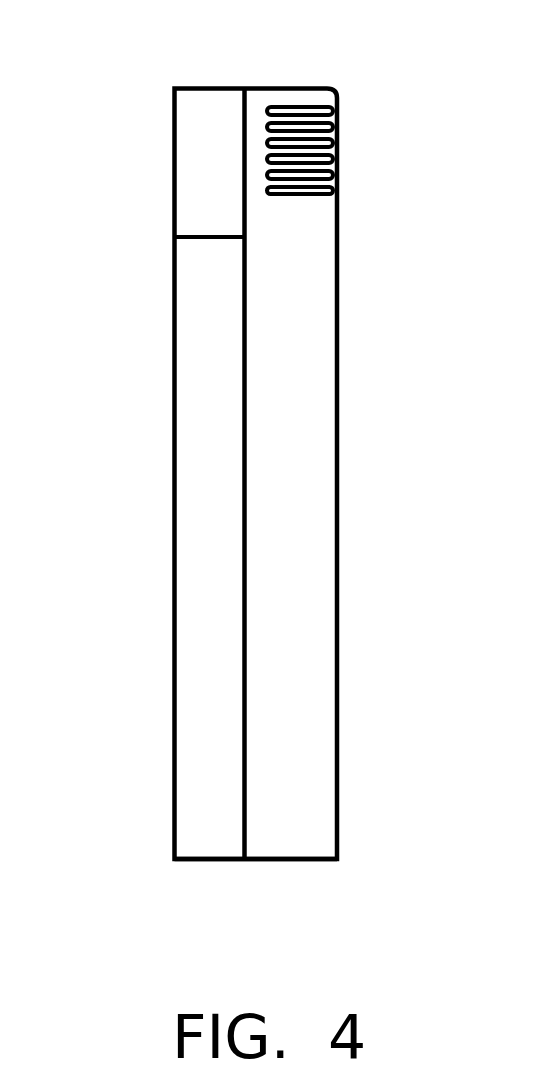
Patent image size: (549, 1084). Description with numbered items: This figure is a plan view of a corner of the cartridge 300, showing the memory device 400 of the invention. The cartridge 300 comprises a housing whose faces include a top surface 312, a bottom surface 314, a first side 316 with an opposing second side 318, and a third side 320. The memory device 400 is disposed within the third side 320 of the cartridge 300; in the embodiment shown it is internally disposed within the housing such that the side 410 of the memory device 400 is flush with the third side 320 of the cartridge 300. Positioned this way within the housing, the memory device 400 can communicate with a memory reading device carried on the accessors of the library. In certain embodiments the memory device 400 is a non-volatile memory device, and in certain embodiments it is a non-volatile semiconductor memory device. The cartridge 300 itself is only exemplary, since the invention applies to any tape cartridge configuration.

The cartridge 300 is at (196, 876).
The top surface 312 is at (339, 455).
The bottom surface 314 is at (172, 460).
The first side 316 is at (298, 87).
The second side 318 is at (293, 861).
The third side 320 is at (318, 302).
The memory device 400 is at (218, 87).
The side of memory device 410 is at (193, 158).